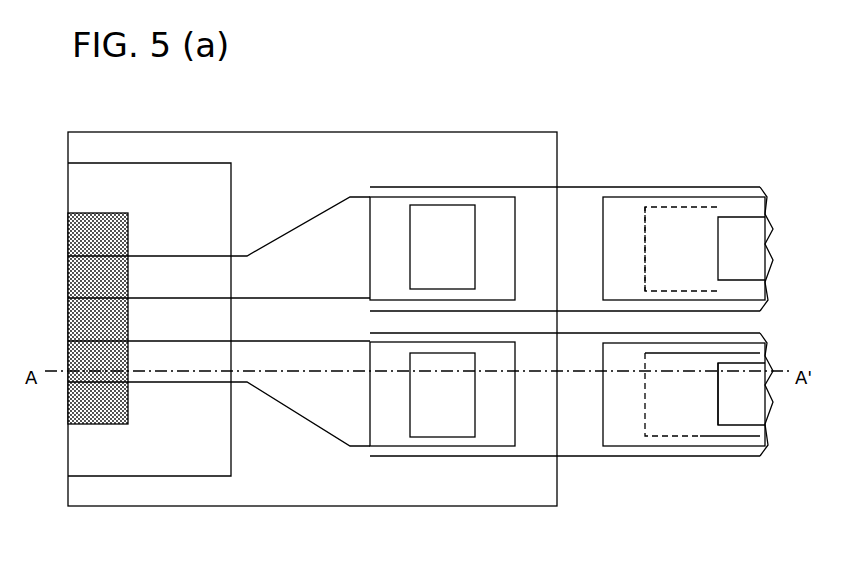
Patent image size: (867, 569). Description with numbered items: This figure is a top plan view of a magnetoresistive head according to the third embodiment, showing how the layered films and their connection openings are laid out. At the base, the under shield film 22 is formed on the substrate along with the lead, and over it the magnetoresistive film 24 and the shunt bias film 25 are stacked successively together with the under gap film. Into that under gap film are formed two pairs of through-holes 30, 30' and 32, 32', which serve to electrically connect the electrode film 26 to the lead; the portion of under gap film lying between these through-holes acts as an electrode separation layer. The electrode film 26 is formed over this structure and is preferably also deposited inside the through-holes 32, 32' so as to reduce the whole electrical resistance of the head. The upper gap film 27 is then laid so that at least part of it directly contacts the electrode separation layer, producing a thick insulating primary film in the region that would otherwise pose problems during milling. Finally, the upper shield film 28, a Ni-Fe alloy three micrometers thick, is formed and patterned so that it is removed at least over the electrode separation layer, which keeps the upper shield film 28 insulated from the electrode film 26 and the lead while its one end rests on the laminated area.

The under shield film 22 is at (135, 163).
The magnetoresistive film 24 is at (66, 318).
The shunt bias film 25 is at (82, 278).
The electrode film 26 is at (355, 197).
The upper gap film 27 is at (720, 393).
The upper shield film 28 is at (281, 132).
The through-hole 30 is at (431, 454).
The through-hole 30' is at (452, 196).
The through-hole 32 is at (701, 433).
The through-hole 32' is at (731, 222).